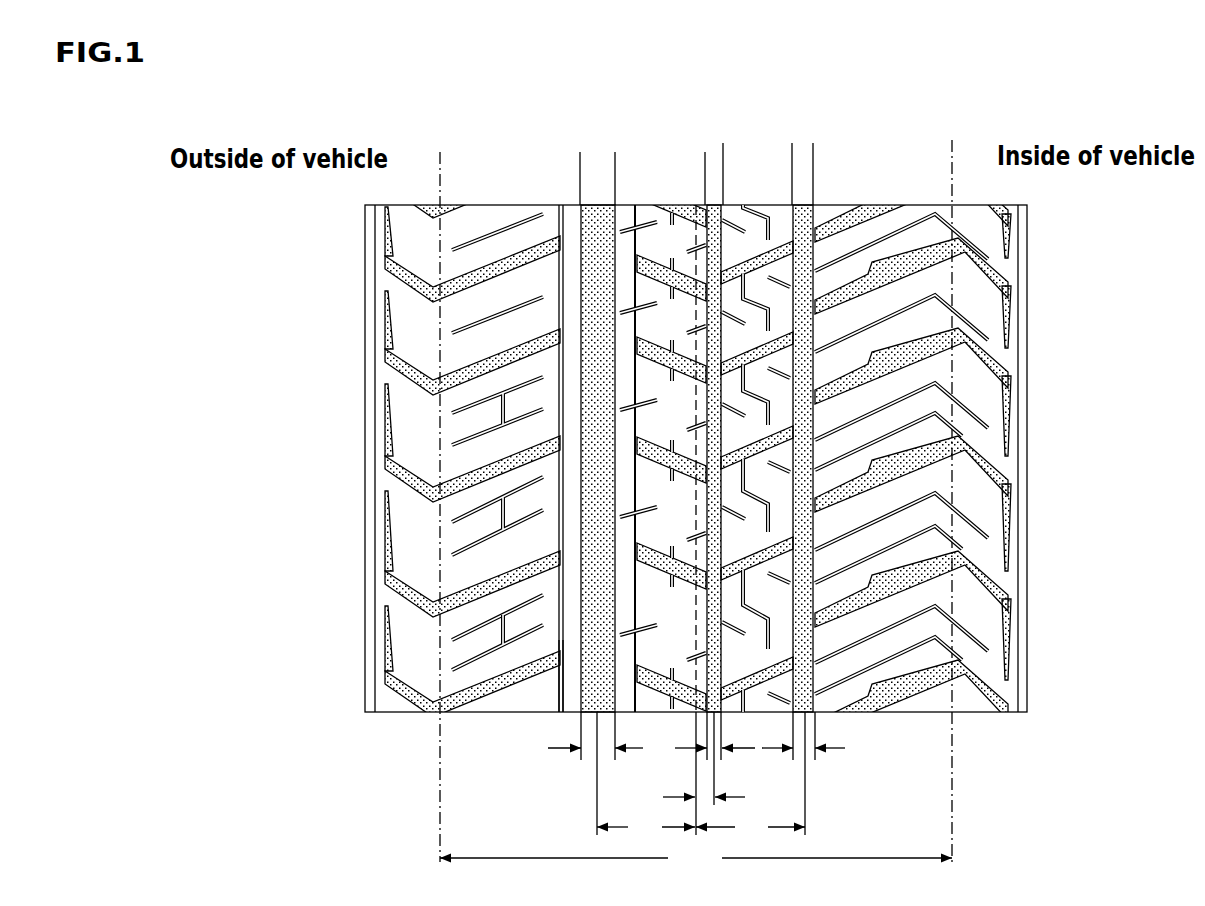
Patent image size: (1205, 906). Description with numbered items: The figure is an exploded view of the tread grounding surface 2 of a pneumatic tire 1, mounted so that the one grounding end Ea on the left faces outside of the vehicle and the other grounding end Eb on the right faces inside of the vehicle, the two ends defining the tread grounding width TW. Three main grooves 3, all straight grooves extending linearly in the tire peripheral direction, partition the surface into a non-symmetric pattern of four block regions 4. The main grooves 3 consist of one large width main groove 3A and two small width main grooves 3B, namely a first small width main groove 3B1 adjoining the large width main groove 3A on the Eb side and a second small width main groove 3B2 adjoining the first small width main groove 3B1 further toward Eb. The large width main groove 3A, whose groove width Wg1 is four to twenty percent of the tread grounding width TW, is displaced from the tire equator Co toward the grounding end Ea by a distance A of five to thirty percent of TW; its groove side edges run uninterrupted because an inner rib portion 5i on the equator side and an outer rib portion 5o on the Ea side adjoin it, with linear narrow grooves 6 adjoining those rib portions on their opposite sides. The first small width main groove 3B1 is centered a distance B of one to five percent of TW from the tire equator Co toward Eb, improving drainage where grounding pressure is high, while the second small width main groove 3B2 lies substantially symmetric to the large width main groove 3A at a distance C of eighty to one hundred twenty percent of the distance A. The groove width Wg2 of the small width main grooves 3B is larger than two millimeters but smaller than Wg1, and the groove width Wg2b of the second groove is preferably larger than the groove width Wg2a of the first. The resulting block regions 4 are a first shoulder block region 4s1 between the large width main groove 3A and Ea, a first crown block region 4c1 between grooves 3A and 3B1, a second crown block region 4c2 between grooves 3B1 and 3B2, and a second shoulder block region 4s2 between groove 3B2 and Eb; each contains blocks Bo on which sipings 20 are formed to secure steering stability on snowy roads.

The pneumatic tire 1 is at (1062, 315).
The tread grounding surface 2 is at (1038, 265).
The main grooves 3 is at (764, 402).
The large width main groove 3A is at (592, 225).
The small width main grooves 3B is at (827, 435).
The first small width main groove 3B1 is at (711, 212).
The second small width main groove 3B2 is at (804, 215).
The block regions 4 is at (698, 418).
The first shoulder block region 4s1 is at (578, 152).
The first crown block region 4c1 is at (705, 152).
The second crown block region 4c2 is at (792, 143).
The second shoulder block region 4s2 is at (953, 138).
The inner rib portion 5i is at (547, 701).
The outer rib portion 5o is at (560, 695).
The linear narrow grooves 6 is at (557, 222).
The sipings 20 is at (670, 602).
The blocks Bo is at (648, 582).
The tire equator Co is at (694, 703).
The one grounding end Ea is at (440, 735).
The other grounding end Eb is at (955, 735).
The tread grounding width TW is at (696, 859).
The groove width of the large width main groove Wg1 is at (585, 750).
The groove width of the first small width main groove Wg2a is at (708, 752).
The groove width of the second small width main groove Wg2b is at (860, 780).
The groove width of the small width main grooves Wg2 is at (853, 766).
The distance of the large width main groove center from the tire equator A is at (646, 779).
The distance of the first small width main groove center from the tire equator B is at (703, 797).
The distance of the second small width main groove center from the tire equator C is at (750, 779).